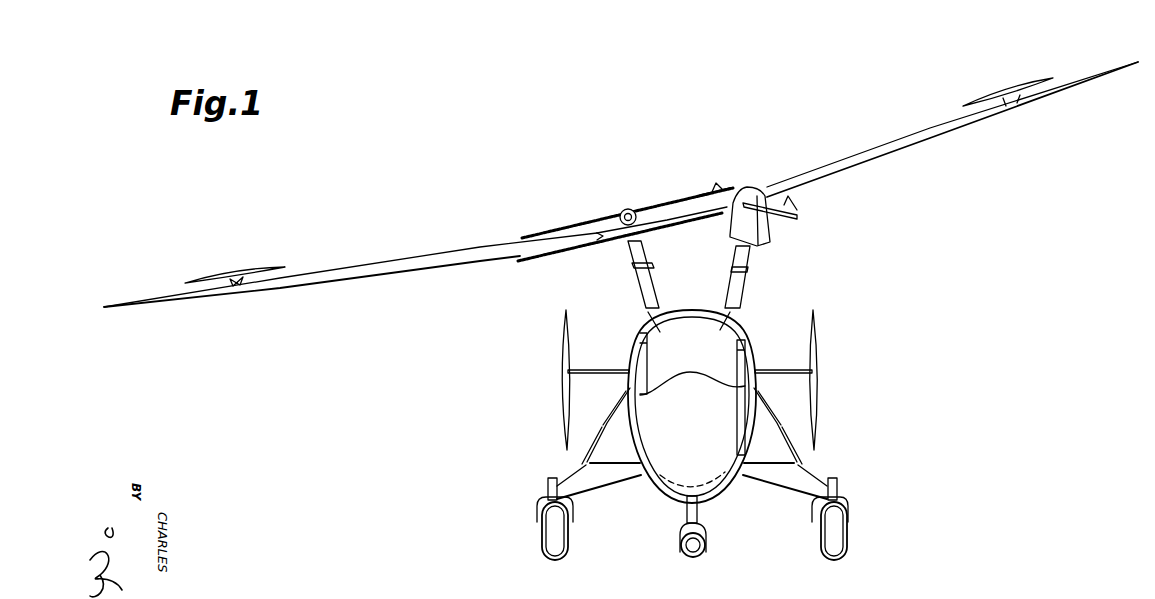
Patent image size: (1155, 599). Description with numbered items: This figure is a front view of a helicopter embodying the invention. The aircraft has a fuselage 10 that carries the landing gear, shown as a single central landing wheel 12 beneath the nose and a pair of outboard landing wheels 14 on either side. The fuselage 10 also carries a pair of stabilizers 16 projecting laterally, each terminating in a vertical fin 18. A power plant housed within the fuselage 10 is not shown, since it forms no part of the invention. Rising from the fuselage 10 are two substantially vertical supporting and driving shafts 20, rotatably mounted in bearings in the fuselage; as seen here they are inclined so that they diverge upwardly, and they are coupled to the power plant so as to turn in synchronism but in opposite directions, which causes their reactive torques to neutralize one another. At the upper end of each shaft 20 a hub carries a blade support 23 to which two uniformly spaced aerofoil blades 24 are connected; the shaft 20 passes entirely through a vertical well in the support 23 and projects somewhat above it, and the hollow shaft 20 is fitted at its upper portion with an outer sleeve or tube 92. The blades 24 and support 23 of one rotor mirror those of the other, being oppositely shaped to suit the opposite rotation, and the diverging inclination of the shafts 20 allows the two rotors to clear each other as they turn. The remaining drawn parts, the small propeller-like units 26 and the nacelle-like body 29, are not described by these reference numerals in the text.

The fuselage 10 is at (732, 360).
The landing wheel 12 is at (706, 549).
The landing wheels 14 is at (542, 544).
The stabilizers 16 is at (591, 372).
The vertical fins 18 is at (568, 333).
The supporting and driving shaft 20 is at (643, 294).
The blade support 23 is at (600, 240).
The aerofoil blades 24 is at (383, 263).
The propellers 26 is at (253, 274).
The nacelle 29 is at (732, 226).
The outer sleeve or tube 92 is at (631, 260).